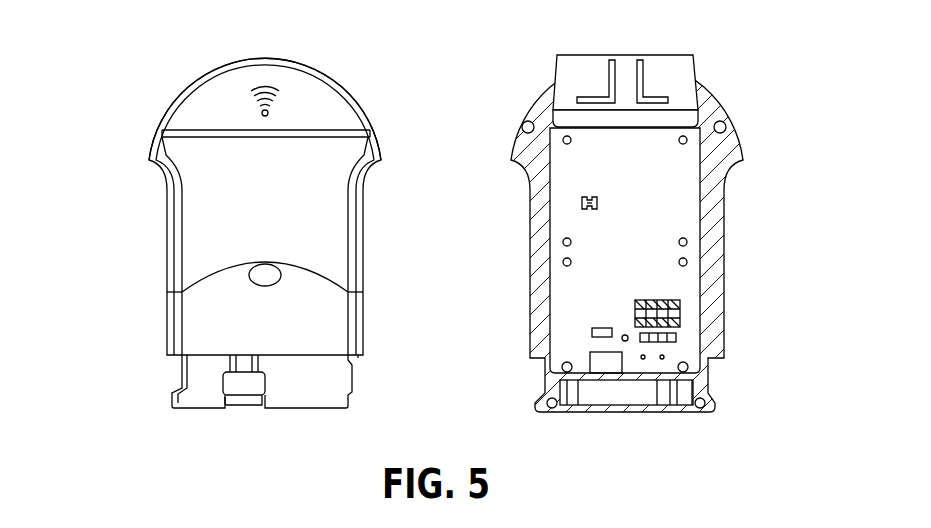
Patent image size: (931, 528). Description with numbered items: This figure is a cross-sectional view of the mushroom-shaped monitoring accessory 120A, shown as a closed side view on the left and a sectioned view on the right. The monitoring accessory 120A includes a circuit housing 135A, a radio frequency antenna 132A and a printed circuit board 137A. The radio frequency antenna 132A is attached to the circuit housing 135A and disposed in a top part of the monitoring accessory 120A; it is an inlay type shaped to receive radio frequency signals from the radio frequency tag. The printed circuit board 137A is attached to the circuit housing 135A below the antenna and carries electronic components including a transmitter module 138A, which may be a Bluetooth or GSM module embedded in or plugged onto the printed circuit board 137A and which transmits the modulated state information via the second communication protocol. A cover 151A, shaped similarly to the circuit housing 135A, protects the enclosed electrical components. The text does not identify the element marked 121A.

The mushroom-shaped monitoring accessory 120A is at (178, 127).
The wireless indicator 121A is at (245, 92).
The cover 151A is at (376, 91).
The radio frequency antenna 132A is at (698, 64).
The circuit housing 135A is at (722, 158).
The printed circuit board 137A is at (722, 273).
The transmitter module 138A is at (582, 203).